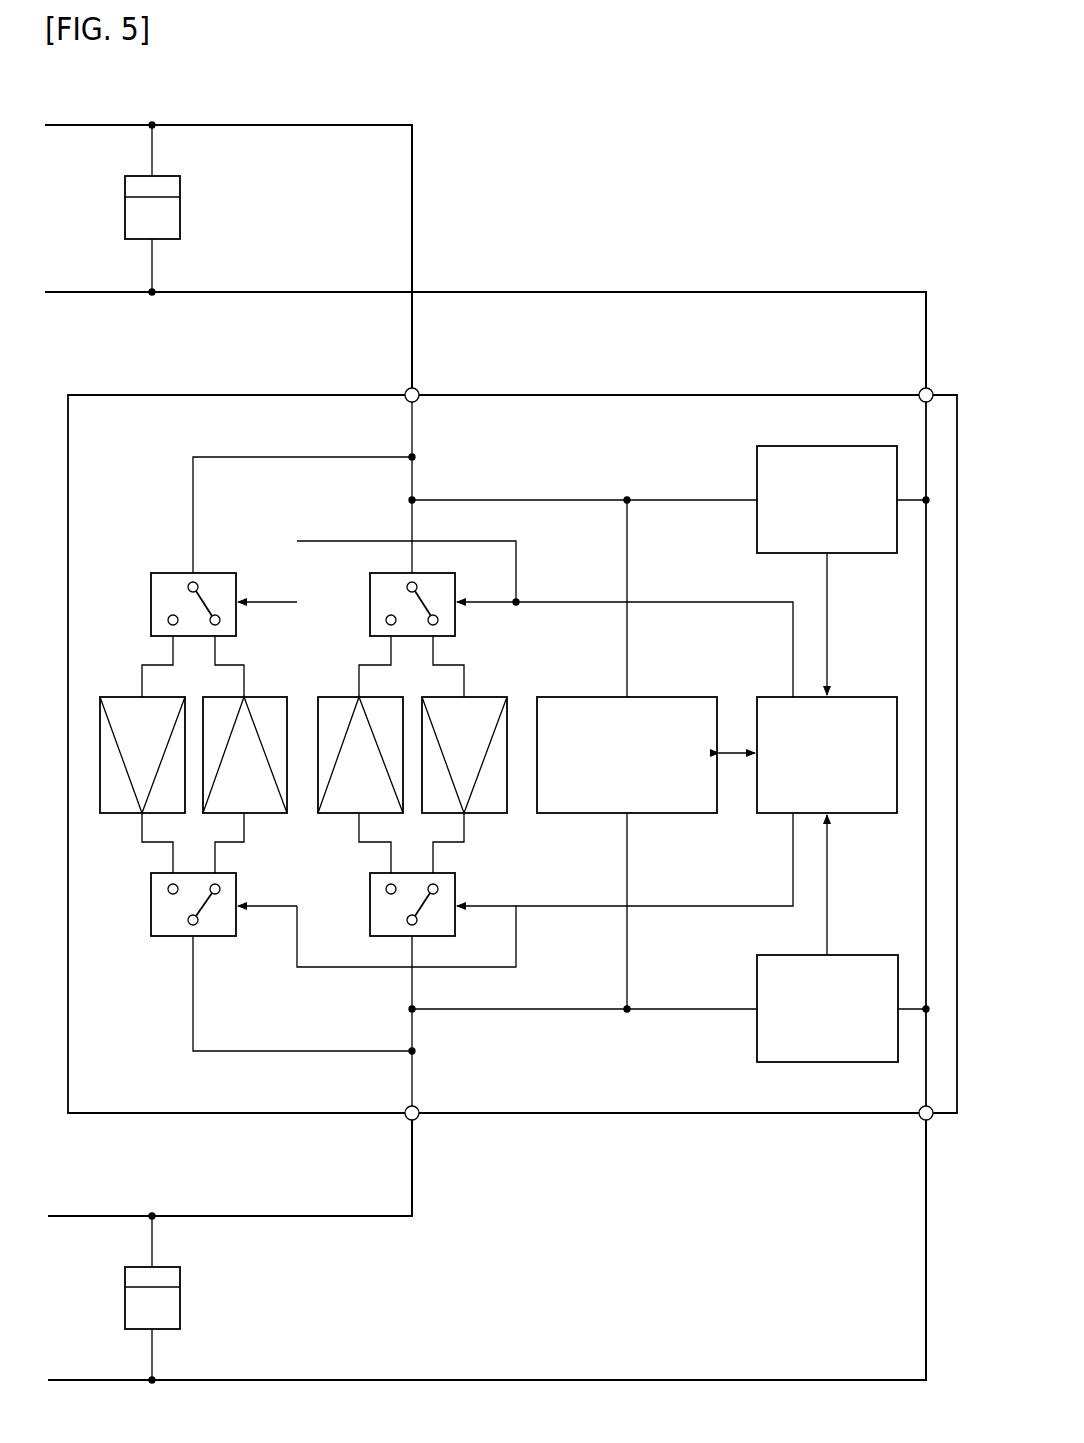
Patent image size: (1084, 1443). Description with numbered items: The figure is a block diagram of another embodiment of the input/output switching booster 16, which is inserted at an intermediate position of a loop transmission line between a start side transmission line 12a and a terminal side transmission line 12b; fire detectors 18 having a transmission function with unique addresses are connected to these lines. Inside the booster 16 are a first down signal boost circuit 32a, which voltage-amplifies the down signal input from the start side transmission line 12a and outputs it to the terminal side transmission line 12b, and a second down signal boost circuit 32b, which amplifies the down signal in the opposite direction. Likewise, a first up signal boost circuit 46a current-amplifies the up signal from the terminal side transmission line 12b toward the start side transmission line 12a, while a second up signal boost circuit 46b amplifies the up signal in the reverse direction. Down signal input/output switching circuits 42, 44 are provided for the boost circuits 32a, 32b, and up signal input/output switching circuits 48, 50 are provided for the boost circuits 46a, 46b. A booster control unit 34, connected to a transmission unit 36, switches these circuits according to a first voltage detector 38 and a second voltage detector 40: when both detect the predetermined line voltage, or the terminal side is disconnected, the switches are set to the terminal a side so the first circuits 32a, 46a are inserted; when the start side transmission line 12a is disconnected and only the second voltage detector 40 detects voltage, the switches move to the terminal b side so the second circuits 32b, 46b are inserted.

The start side transmission line 12a is at (312, 125).
The terminal side transmission line 12b is at (312, 1216).
The fire detector 18 is at (180, 213).
The input/output switching booster 16 is at (612, 393).
The up signal input/output switching circuit 50 is at (151, 619).
The down signal input/output switching circuit 42 is at (370, 619).
The up signal input/output switching circuit 48 is at (151, 889).
The down signal input/output switching circuit 44 is at (370, 889).
The first up signal boost circuit 46a is at (267, 797).
The second up signal boost circuit 46b is at (163, 741).
The first down signal boost circuit 32a is at (485, 741).
The second down signal boost circuit 32b is at (380, 797).
The transmission unit 36 is at (643, 787).
The booster control unit 34 is at (843, 797).
The first voltage detector 38 is at (843, 544).
The second voltage detector 40 is at (843, 1052).